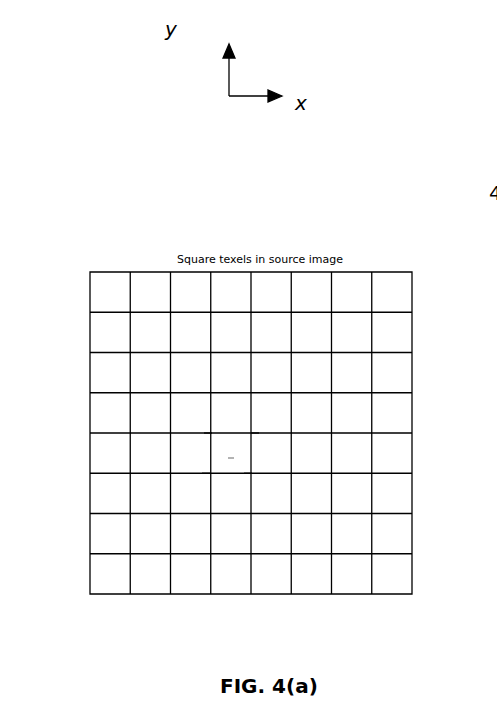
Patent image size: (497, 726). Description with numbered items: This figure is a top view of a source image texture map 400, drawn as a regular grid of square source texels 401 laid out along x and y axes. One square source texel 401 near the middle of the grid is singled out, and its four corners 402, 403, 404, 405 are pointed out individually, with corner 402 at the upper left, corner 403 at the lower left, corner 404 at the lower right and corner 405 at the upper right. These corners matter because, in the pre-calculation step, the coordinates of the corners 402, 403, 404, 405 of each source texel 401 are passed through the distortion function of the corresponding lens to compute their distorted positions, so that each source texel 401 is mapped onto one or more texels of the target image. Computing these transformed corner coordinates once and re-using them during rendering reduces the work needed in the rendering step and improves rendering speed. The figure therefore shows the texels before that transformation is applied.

The source image texture map 400 is at (115, 250).
The square source texel 401 is at (231, 459).
The corner of source texel 402 is at (208, 432).
The corner of source texel 403 is at (206, 471).
The corner of source texel 404 is at (246, 471).
The corner of source texel 405 is at (255, 432).